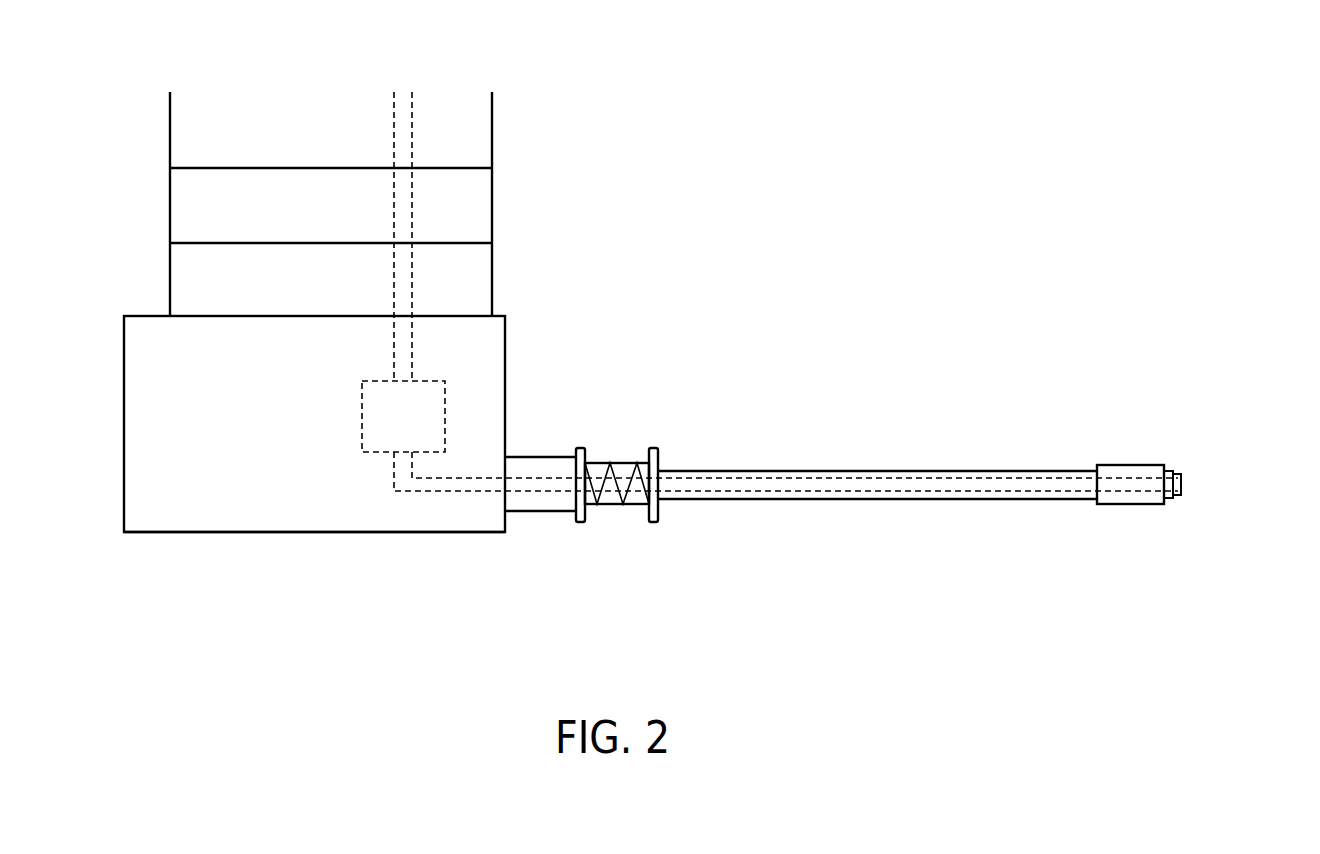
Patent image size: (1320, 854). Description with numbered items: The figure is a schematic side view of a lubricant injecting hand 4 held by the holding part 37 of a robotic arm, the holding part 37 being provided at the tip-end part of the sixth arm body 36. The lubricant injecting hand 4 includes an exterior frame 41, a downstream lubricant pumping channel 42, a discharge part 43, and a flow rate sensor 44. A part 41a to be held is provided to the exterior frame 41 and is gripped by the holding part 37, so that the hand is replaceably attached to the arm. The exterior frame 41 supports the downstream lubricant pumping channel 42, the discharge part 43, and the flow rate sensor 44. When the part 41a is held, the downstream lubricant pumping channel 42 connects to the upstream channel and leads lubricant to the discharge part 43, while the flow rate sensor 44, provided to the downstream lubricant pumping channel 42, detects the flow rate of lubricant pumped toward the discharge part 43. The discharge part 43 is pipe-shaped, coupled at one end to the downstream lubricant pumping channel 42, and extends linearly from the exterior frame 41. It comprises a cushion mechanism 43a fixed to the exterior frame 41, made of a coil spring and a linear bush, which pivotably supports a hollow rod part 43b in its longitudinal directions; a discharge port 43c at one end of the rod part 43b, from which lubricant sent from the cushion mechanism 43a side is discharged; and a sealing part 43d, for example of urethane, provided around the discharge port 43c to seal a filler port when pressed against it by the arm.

The lubricant injecting hand 4 is at (241, 534).
The sixth arm body 36 is at (170, 118).
The holding part 37 is at (170, 198).
The exterior frame 41 is at (505, 352).
The part to be held 41a is at (170, 277).
The downstream lubricant pumping channel 42 is at (435, 490).
The discharge part 43 is at (908, 501).
The cushion mechanism 43a is at (590, 505).
The rod part 43b is at (877, 470).
The discharge port 43c is at (1183, 483).
The sealing part 43d is at (1166, 505).
The flow rate sensor 44 is at (362, 413).